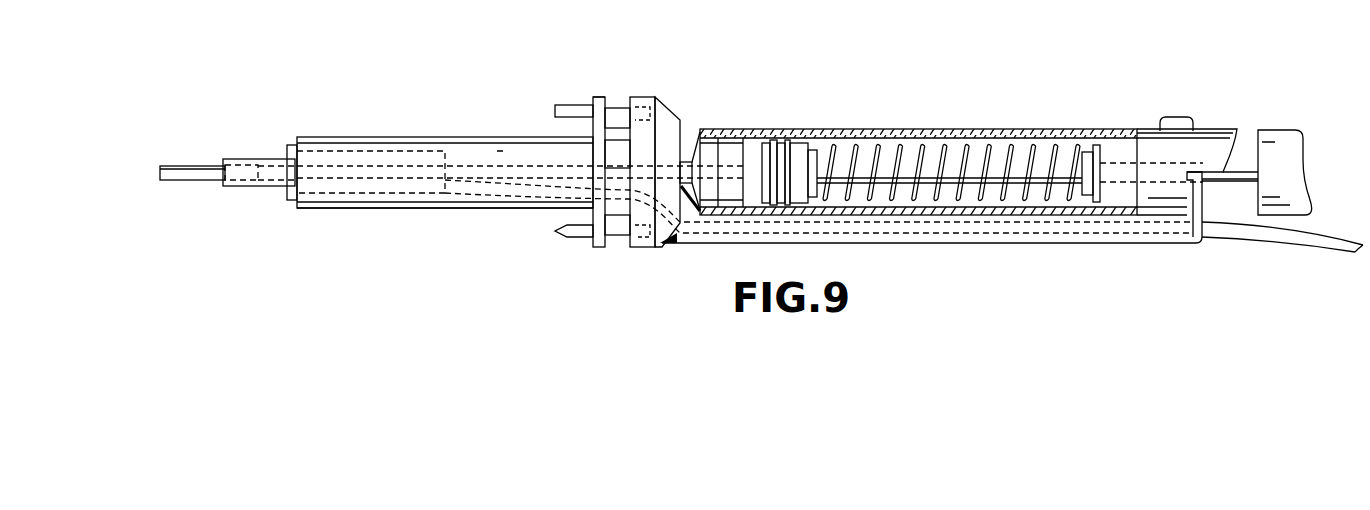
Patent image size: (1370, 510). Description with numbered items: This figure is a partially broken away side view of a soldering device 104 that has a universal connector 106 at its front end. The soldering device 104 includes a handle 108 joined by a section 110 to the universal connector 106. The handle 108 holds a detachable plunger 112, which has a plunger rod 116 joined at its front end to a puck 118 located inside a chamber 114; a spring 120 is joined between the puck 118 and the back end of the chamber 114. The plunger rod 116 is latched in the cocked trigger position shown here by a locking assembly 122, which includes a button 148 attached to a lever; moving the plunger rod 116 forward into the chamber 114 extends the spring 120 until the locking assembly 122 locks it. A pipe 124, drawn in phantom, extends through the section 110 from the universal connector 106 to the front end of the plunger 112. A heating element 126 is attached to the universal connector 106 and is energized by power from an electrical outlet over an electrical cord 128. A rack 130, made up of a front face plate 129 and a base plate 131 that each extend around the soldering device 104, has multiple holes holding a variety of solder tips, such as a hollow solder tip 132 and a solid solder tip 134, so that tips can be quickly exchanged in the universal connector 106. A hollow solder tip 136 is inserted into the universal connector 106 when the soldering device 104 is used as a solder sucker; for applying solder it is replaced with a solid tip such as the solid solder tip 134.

The soldering device 104 is at (949, 60).
The universal connector 106 is at (257, 159).
The handle 108 is at (950, 243).
The section 110 is at (453, 208).
The detachable plunger 112 is at (1007, 128).
The chamber 114 is at (1082, 144).
The plunger rod 116 is at (860, 145).
The puck 118 is at (758, 150).
The spring 120 is at (957, 128).
The locking assembly 122 is at (1191, 103).
The pipe 124 is at (492, 165).
The heating element 126 is at (372, 137).
The electrical cord 128 is at (513, 200).
The front face plate 129 is at (600, 96).
The rack 130 is at (641, 68).
The base plate 131 is at (672, 107).
The hollow solder tip 132 is at (578, 105).
The solid solder tip 134 is at (577, 240).
The hollow solder tip 136 is at (178, 181).
The button 148 is at (1163, 117).